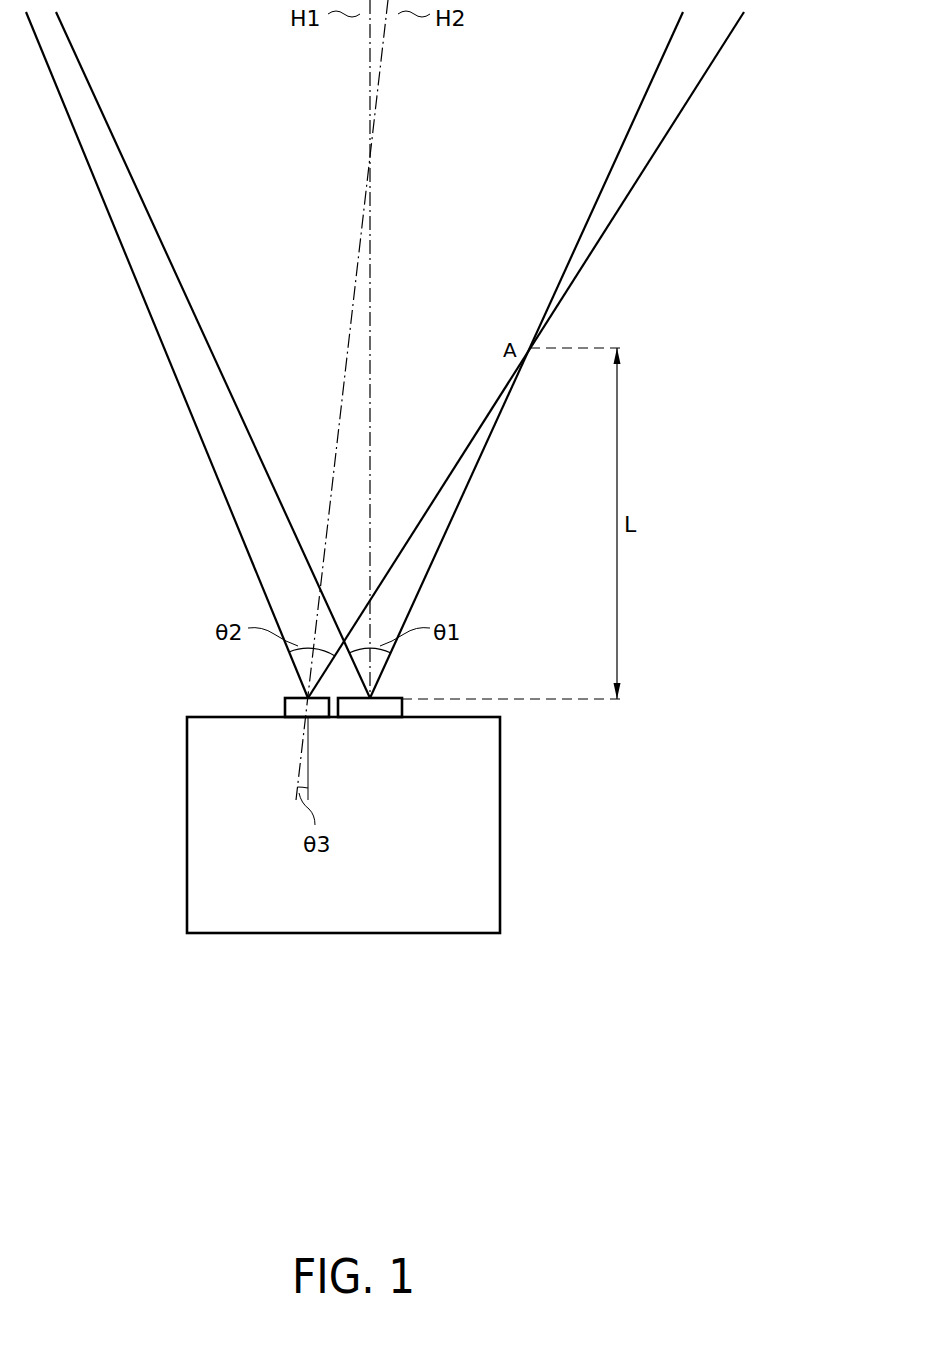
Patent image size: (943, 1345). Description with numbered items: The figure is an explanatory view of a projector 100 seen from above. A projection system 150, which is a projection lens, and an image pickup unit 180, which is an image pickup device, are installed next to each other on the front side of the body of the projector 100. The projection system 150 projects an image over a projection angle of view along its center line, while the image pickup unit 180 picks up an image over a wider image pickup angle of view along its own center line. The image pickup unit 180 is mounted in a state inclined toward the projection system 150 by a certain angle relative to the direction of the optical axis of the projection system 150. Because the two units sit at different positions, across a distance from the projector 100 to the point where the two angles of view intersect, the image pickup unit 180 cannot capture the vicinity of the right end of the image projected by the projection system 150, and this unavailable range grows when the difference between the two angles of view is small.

The projector 100 is at (492, 825).
The image pickup unit 180 is at (294, 696).
The projection system 150 is at (386, 696).